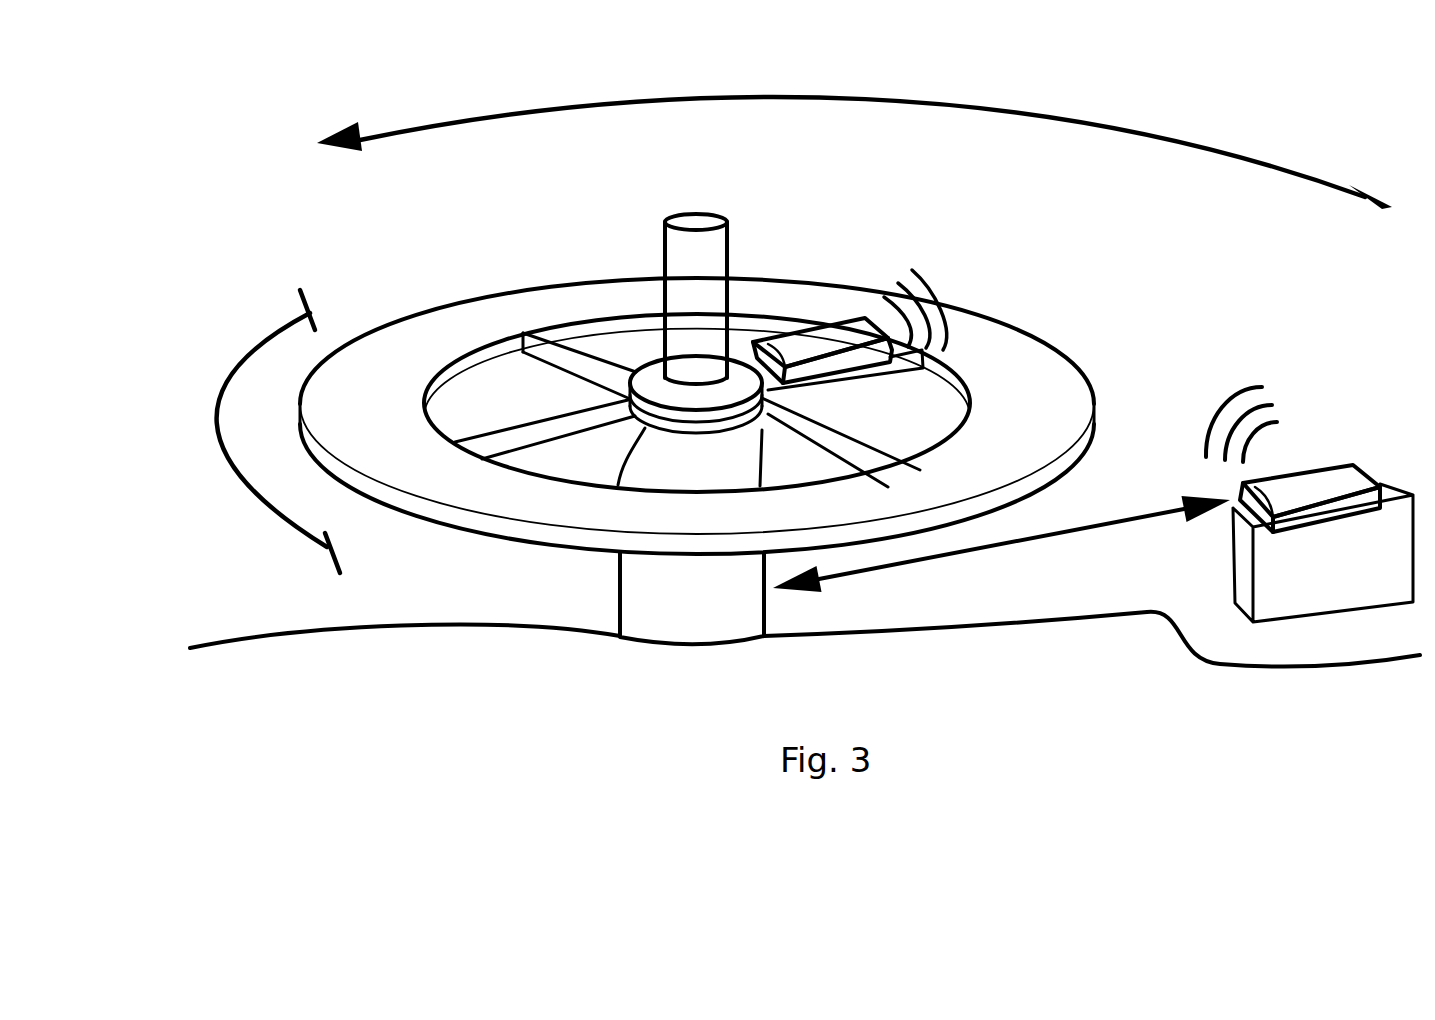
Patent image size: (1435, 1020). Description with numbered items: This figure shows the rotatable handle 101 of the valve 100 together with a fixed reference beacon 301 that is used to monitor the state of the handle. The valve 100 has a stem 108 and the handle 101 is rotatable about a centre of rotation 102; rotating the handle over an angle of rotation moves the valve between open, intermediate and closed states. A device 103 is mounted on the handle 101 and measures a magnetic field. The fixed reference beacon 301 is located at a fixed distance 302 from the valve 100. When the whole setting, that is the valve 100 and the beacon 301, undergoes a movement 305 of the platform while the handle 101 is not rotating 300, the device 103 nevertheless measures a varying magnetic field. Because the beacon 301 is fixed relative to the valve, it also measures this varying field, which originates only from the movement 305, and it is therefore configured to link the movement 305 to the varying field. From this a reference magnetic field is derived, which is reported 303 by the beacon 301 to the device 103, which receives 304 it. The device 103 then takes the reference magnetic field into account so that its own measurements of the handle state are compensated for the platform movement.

The valve 100 is at (592, 588).
The rotatable handle 101 is at (405, 340).
The centre of rotation 102 is at (687, 216).
The device 103 is at (845, 335).
The stem 108 is at (527, 435).
The not rotating 300 is at (217, 442).
The fixed reference beacon 301 is at (1322, 487).
The fixed distance 302 is at (1157, 507).
The reporting 303 is at (1222, 362).
The receiving 304 is at (934, 251).
The movement 305 is at (1264, 158).